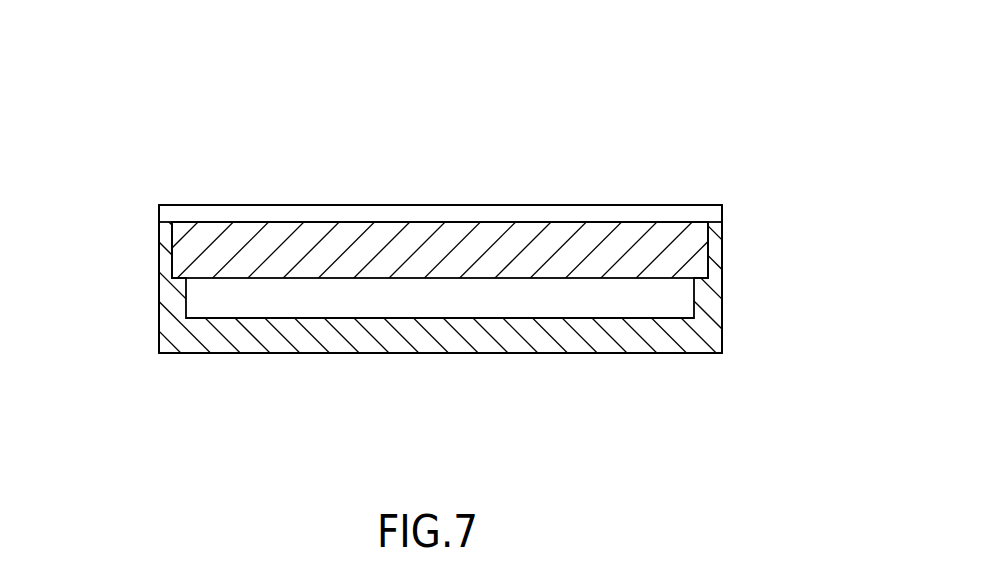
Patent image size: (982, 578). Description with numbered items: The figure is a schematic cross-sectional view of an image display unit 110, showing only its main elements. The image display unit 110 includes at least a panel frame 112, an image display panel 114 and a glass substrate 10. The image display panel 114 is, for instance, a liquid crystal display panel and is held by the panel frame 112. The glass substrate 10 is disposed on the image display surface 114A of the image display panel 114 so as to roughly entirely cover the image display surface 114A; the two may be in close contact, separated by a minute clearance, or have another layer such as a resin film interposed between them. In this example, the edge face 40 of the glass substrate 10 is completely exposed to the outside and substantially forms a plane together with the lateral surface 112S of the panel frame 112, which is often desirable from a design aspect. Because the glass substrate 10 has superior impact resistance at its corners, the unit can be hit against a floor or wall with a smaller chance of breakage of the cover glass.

The image display unit 110 is at (778, 99).
The glass substrate 10 is at (703, 213).
The edge face 40 is at (148, 219).
The panel frame 112 is at (703, 330).
The lateral surface 112S is at (148, 304).
The image display panel 114 is at (686, 241).
The image display surface 114A is at (612, 212).